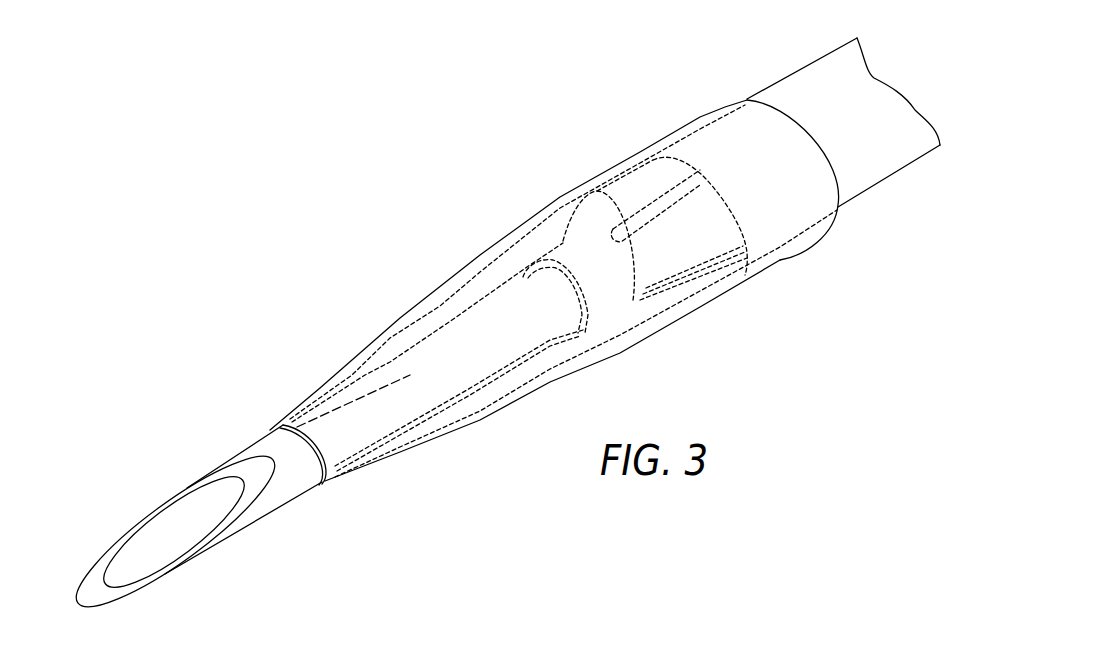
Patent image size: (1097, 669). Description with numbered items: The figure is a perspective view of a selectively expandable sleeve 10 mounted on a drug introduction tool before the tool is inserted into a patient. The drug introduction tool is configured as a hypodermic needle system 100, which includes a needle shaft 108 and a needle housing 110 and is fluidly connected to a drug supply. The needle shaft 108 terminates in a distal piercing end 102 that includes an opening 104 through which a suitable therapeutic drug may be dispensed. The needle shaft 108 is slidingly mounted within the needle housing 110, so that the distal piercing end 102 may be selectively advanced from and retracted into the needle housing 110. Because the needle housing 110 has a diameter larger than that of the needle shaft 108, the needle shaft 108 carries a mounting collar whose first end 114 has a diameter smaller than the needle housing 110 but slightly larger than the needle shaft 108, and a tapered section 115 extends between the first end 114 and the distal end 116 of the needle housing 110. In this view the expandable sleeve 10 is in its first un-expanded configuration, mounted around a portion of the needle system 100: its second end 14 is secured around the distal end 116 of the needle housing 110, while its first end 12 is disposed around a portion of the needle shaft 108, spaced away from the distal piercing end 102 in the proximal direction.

The selectively expandable sleeve 10 is at (680, 320).
The first end 12 is at (315, 455).
The second end 14 is at (713, 113).
The hypodermic needle system 100 is at (272, 400).
The distal piercing end 102 is at (75, 591).
The opening 104 is at (168, 533).
The needle shaft 108 is at (440, 388).
The needle housing 110 is at (812, 78).
The first end 114 is at (563, 241).
The tapered section 115 is at (700, 252).
The distal end 116 is at (780, 168).